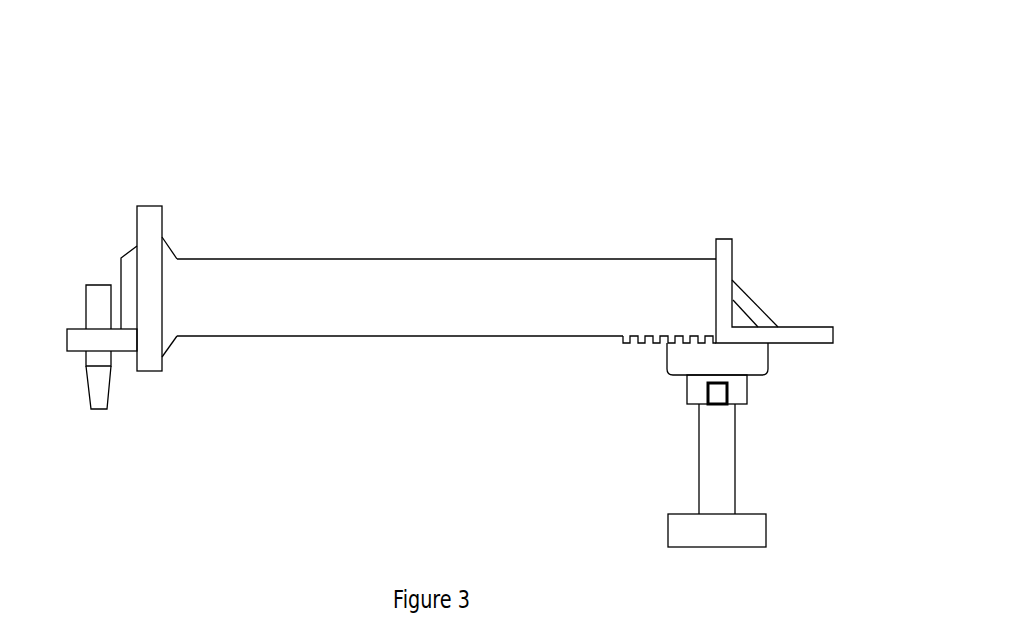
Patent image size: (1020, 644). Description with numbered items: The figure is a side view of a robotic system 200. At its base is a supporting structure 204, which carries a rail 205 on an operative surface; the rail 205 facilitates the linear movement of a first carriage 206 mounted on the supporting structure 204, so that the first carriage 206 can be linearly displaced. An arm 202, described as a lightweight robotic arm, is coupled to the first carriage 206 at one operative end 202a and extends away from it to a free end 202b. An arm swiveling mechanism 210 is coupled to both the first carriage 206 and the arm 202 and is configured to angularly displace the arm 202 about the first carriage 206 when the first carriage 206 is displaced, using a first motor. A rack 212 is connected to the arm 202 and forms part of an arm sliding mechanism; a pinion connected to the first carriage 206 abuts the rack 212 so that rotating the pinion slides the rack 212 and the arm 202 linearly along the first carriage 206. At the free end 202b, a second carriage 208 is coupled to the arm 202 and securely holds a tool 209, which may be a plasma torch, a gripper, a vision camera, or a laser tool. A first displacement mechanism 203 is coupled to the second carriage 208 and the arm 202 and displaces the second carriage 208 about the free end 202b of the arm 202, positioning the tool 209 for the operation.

The robotic system 200 is at (652, 78).
The arm 202 is at (431, 257).
The operative end of the arm 202a is at (714, 256).
The free end of the arm 202b is at (163, 236).
The first displacement mechanism 203 is at (151, 374).
The supporting structure 204 is at (716, 455).
The rail 205 is at (719, 392).
The first carriage 206 is at (694, 388).
The second carriage 208 is at (72, 327).
The tool 209 is at (99, 403).
The arm swiveling mechanism 210 is at (769, 347).
The rack 212 is at (641, 346).